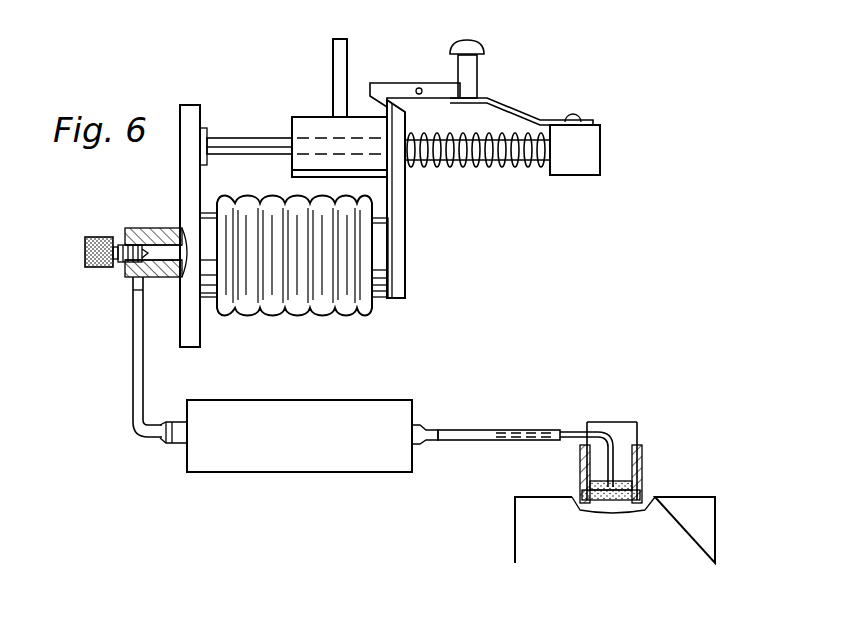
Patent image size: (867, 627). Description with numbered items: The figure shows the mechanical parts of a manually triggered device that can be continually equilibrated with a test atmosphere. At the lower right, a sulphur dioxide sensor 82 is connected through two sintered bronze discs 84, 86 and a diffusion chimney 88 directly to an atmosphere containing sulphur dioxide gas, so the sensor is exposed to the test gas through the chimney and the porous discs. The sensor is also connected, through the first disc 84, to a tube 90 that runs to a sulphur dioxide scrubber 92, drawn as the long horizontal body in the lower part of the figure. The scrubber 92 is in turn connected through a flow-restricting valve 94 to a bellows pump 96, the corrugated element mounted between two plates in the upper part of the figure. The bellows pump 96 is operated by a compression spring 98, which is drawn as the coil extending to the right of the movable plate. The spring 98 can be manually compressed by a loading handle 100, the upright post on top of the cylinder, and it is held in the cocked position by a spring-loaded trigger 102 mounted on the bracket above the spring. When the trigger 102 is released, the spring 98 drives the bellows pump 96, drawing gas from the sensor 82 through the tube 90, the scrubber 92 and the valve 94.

The sulphur dioxide sensor 82 is at (522, 532).
The sintered bronze disc 84 is at (638, 495).
The sintered bronze disc 86 is at (622, 483).
The diffusion chimney 88 is at (639, 426).
The tube 90 is at (568, 428).
The SO2 scrubber 92 is at (303, 400).
The flow-restricting valve 94 is at (136, 228).
The bellows pump 96 is at (341, 317).
The compression spring 98 is at (519, 162).
The loading handle 100 is at (333, 60).
The spring-loaded trigger 102 is at (471, 71).